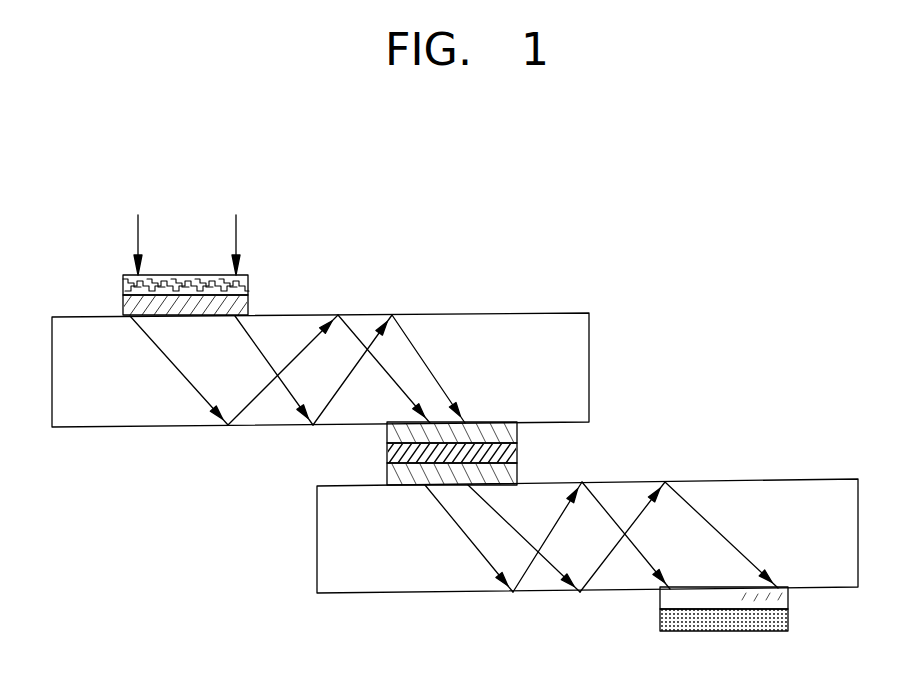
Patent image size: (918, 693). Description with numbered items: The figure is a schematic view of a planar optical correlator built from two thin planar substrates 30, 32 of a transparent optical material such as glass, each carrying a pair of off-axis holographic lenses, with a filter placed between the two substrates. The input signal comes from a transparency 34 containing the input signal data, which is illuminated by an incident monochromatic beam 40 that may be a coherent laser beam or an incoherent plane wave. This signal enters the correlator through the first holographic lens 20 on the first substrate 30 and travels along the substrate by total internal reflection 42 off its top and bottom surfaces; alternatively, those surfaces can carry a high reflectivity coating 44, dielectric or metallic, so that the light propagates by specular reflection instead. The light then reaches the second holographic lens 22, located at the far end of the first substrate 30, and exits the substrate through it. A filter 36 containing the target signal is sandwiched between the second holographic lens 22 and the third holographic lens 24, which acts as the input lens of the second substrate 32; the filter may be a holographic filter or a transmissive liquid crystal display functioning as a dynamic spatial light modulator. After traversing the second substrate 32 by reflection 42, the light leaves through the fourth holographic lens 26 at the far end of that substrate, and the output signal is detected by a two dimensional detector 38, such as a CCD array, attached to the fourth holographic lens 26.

The first holographic lens 20 is at (129, 306).
The second holographic lens 22 is at (508, 430).
The third holographic lens 24 is at (387, 470).
The fourth holographic lens 26 is at (783, 597).
The first substrate 30 is at (107, 390).
The second substrate 32 is at (363, 558).
The transparency 34 is at (249, 282).
The filter 36 is at (387, 453).
The two dimensional detector 38 is at (662, 622).
The incident monochromatic beam 40 is at (138, 243).
The total internal reflection 42 is at (236, 319).
The high reflectivity coating 44 is at (490, 313).